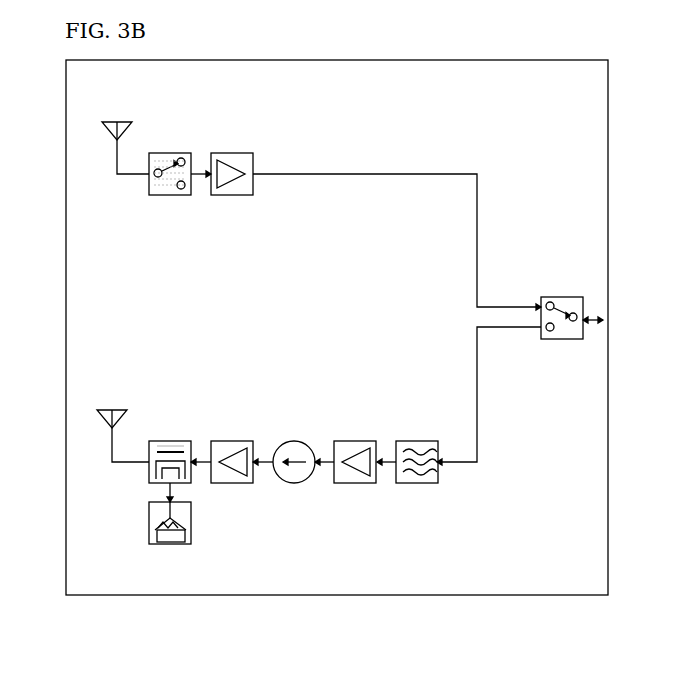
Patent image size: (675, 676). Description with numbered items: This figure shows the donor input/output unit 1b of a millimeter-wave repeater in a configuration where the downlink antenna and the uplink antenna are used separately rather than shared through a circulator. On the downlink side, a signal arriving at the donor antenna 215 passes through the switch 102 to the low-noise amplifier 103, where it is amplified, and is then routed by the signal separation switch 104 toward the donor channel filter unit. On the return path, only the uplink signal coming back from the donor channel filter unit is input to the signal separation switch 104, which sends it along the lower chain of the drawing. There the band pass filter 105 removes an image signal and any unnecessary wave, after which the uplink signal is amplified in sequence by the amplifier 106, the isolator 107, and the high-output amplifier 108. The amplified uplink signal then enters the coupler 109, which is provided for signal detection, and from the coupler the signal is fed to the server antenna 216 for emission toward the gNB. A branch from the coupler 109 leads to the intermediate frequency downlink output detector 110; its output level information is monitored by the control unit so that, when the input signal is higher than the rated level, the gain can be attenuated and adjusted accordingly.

The wireless communication device 1b is at (435, 595).
The donor antenna 215 is at (114, 122).
The server antenna 216 is at (112, 410).
The switch 102 is at (170, 153).
The low-noise amplifier 103 is at (232, 153).
The signal separation switch 104 is at (562, 297).
The band pass filter 105 is at (417, 441).
The amplifier 106 is at (357, 441).
The isolator 107 is at (293, 441).
The high-output amplifier 108 is at (233, 441).
The coupler 109 is at (173, 441).
The intermediate frequency downlink output detector 110 is at (165, 544).